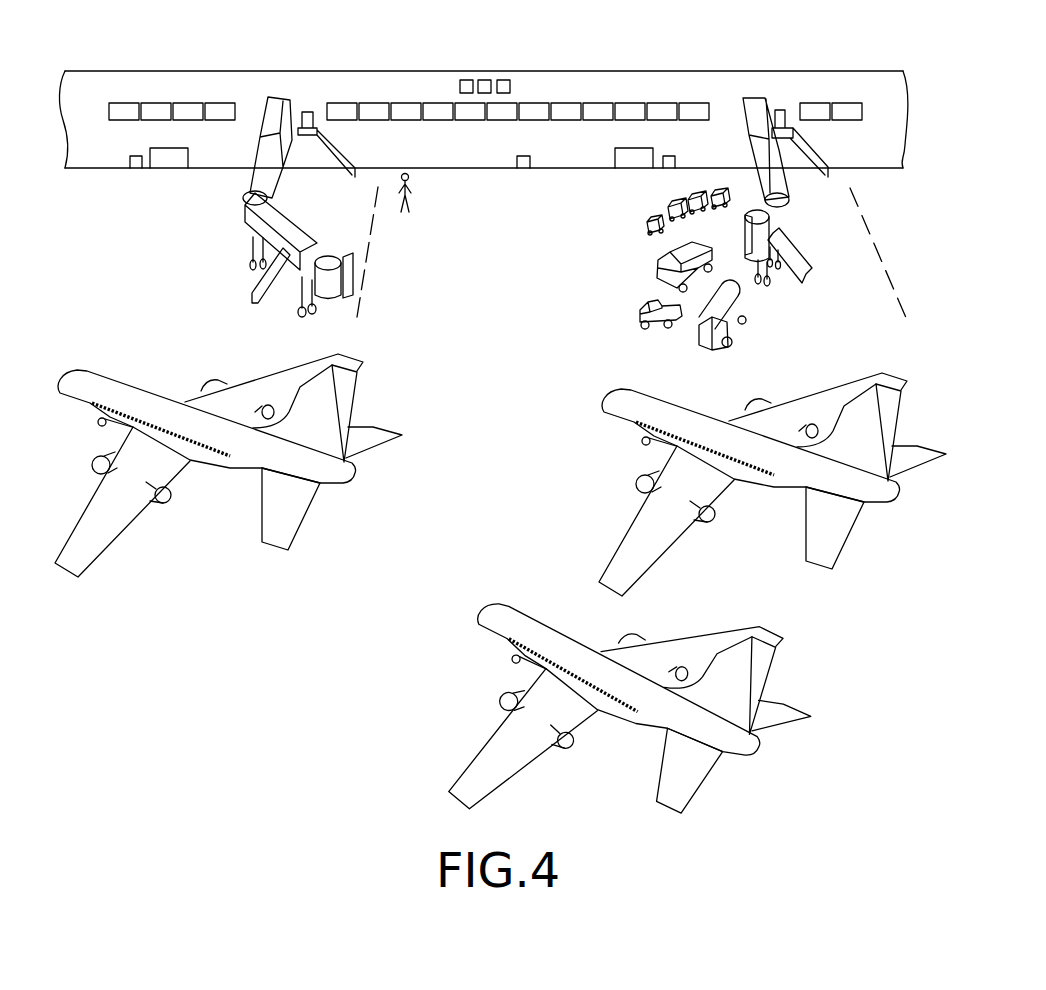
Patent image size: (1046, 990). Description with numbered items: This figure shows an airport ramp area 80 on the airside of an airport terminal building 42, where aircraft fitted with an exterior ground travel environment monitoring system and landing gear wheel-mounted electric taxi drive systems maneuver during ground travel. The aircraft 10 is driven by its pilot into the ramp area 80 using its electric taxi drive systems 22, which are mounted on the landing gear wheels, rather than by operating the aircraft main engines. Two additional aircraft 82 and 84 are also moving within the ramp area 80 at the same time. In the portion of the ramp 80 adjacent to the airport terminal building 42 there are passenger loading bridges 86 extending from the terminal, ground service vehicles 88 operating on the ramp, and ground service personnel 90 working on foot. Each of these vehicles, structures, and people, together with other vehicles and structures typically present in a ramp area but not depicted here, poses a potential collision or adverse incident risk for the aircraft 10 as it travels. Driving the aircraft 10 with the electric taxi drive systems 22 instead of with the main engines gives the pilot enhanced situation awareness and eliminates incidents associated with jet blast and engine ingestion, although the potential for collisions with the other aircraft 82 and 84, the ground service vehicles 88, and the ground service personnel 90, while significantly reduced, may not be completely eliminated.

The airport terminal building 42 is at (540, 87).
The passenger loading bridges 86 is at (250, 202).
The ground service personnel 90 is at (410, 190).
The ground service vehicles 88 is at (640, 260).
The airport ramp area 80 is at (368, 580).
The aircraft 84 is at (110, 388).
The aircraft 82 is at (845, 505).
The aircraft 10 is at (596, 721).
The electric taxi drive systems 22 is at (528, 662).